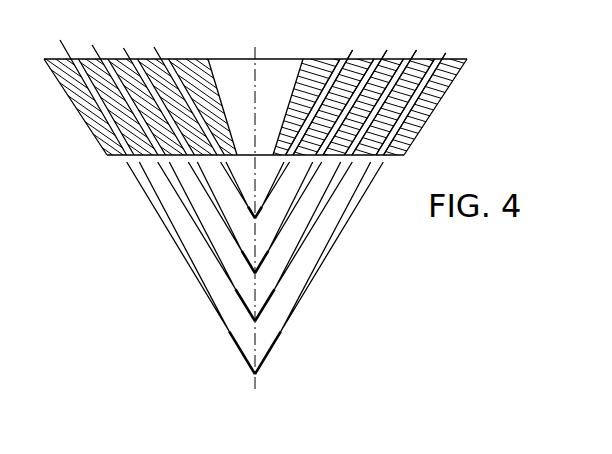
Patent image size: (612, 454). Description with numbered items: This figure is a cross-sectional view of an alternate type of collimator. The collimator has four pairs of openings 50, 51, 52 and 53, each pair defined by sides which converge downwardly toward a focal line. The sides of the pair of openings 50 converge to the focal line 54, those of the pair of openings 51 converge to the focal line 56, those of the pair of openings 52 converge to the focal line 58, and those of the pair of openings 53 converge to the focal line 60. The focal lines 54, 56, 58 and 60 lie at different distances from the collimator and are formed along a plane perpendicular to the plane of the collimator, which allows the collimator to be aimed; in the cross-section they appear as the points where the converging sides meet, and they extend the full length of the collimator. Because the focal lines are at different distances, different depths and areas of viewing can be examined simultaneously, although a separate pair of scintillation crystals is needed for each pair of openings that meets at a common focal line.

The pair of openings 50 is at (447, 60).
The pair of openings 51 is at (416, 50).
The pair of openings 52 is at (388, 50).
The pair of openings 53 is at (347, 60).
The focal line 54 is at (255, 374).
The focal line 56 is at (255, 321).
The focal line 58 is at (255, 273).
The focal line 60 is at (255, 218).